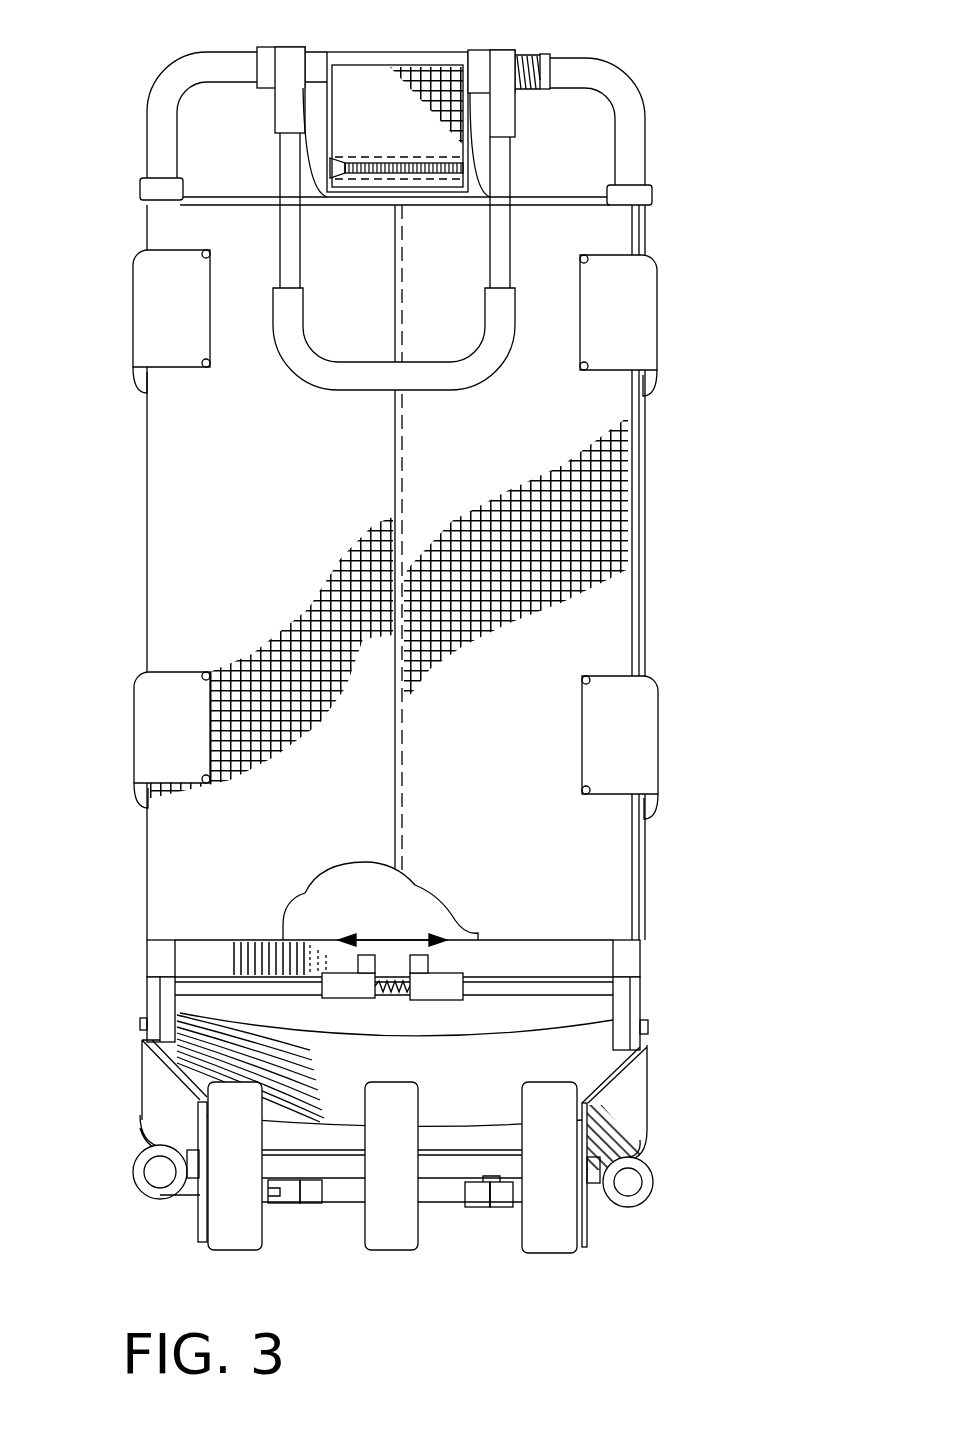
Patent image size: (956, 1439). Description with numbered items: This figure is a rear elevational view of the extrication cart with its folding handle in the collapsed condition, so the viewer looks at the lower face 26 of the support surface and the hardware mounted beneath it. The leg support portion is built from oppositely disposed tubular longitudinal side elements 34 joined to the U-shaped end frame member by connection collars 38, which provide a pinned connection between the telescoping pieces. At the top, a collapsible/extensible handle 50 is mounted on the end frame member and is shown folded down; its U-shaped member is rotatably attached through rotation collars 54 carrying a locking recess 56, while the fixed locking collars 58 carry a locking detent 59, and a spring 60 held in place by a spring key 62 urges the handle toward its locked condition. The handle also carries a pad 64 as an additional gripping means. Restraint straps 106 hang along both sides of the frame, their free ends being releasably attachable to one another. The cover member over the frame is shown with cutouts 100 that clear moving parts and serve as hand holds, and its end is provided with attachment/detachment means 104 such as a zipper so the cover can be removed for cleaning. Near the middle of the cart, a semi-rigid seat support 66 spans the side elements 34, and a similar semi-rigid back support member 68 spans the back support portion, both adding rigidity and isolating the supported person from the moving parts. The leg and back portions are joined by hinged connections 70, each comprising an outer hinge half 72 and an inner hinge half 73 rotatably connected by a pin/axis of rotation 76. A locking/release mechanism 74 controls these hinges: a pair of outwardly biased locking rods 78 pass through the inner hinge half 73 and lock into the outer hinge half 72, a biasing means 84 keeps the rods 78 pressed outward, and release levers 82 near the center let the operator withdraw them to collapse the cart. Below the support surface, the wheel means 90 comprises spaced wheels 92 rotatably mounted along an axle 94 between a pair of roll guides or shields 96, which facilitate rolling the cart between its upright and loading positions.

The lower face 26 is at (216, 622).
The longitudinal side elements 34 is at (150, 945).
The connection collars 38 is at (142, 190).
The collapsible/extensible handles 50 is at (394, 645).
The rotation collars 54 is at (503, 1210).
The locking recess 56 is at (483, 1185).
The fixed locking collars 58 is at (262, 47).
The locking detent 59 is at (490, 1207).
The spring 60 is at (535, 57).
The spring key 62 is at (548, 72).
The pad 64 is at (333, 388).
The seat support 66 is at (342, 885).
The back support member 68 is at (313, 1099).
The hinged connections 70 is at (132, 973).
The outer hinge half 72 is at (147, 1000).
The inner hinge half 73 is at (170, 1003).
The locking/release mechanism 74 is at (400, 910).
The pin/axis of rotation 76 is at (147, 1028).
The locking rods 78 is at (237, 990).
The release levers 82 is at (430, 960).
The biasing means 84 is at (385, 1010).
The wheel means 90 is at (130, 1200).
The wheels 92 is at (243, 1235).
The axle 94 is at (340, 1172).
The roll guides or shields 96 is at (165, 1092).
The cutouts 100 is at (278, 198).
The attachment/detachment means 104 is at (372, 168).
The restraint straps 106 is at (160, 313).